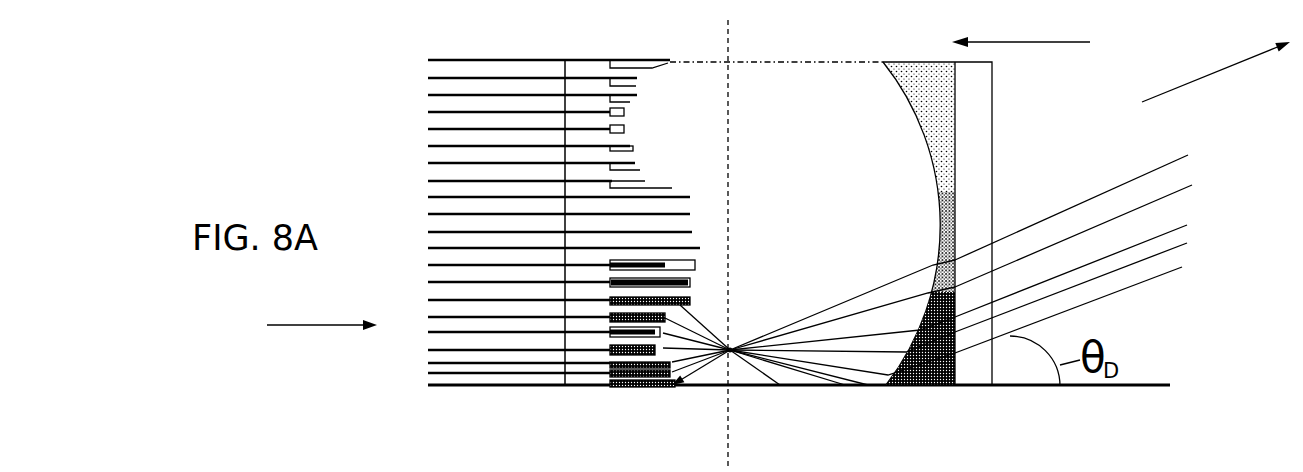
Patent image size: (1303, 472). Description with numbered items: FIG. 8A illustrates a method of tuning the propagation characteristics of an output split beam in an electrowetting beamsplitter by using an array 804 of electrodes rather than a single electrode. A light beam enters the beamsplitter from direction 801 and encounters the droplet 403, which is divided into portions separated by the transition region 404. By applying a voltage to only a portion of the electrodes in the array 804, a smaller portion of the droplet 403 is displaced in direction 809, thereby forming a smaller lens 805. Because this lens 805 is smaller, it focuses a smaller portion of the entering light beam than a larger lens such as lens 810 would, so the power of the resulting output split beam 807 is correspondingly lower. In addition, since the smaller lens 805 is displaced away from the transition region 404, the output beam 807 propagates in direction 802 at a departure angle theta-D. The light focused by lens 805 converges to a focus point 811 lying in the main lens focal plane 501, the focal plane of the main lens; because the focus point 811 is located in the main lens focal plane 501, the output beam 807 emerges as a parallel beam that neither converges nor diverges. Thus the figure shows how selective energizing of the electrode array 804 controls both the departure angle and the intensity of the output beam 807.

The droplet 403 is at (798, 120).
The transition region 404 is at (658, 223).
The main lens focal plane 501 is at (730, 438).
The direction 801 is at (337, 325).
The direction 802 is at (1212, 72).
The array of electrodes 804 is at (627, 348).
The lens 805 is at (678, 345).
The output split beam 807 is at (1090, 255).
The direction 809 is at (1021, 55).
The lens 810 is at (668, 92).
The focal point 811 is at (733, 348).